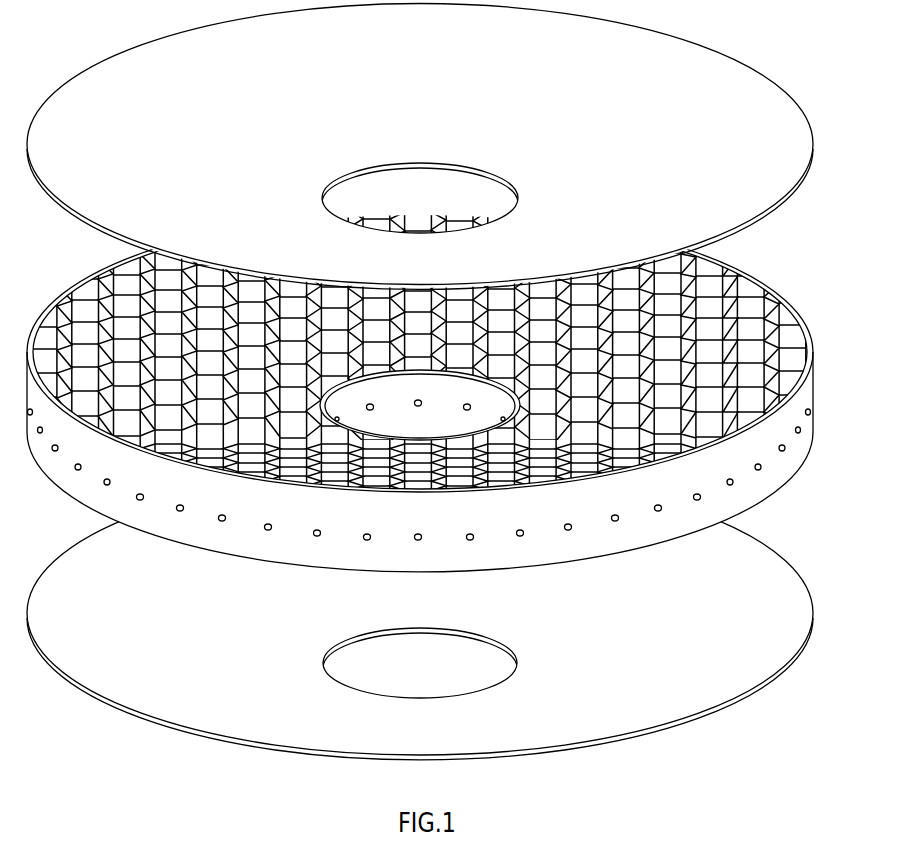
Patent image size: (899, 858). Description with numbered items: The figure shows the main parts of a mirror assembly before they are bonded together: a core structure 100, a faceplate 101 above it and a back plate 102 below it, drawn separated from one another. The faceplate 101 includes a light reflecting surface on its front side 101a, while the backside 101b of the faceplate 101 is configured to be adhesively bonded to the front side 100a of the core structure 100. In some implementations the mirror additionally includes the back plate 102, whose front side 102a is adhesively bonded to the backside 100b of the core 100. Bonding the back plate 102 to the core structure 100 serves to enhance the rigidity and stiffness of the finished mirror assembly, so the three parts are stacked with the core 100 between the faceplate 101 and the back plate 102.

The core structure 100 is at (451, 388).
The front side of the core structure 100a is at (754, 338).
The backside of the core 100b is at (777, 487).
The faceplate 101 is at (448, 254).
The front side of the faceplate 101a is at (753, 95).
The backside of the faceplate 101b is at (787, 212).
The back plate 102 is at (448, 615).
The front side of the back plate 102a is at (748, 654).